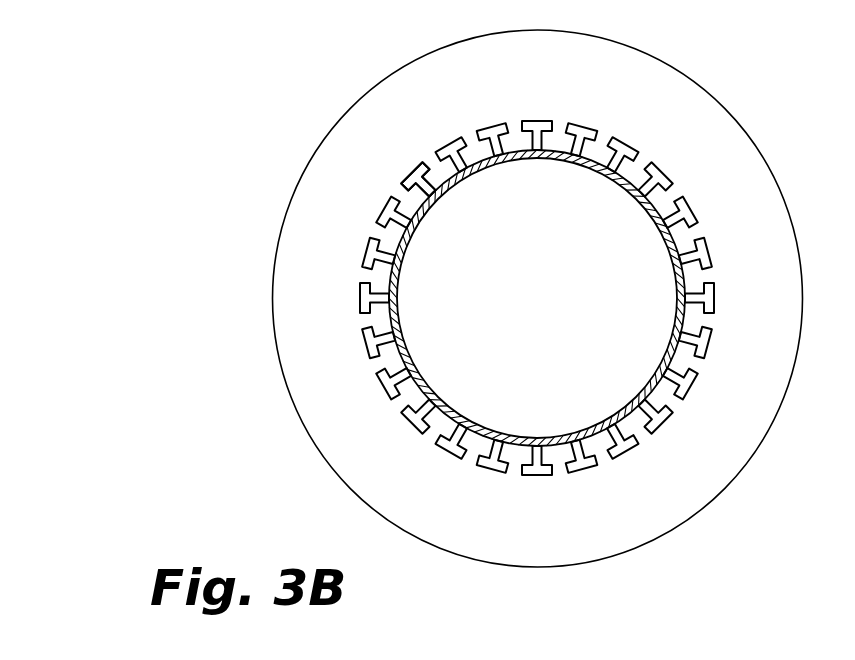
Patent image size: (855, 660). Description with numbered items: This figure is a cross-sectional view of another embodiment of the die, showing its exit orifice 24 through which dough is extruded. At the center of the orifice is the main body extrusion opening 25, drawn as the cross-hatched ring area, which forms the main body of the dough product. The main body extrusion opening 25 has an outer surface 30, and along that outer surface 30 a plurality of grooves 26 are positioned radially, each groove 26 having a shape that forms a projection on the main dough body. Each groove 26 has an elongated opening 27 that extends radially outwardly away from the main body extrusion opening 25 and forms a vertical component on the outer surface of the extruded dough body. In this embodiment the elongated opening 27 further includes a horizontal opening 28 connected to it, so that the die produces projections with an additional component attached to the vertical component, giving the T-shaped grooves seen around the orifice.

The exit orifice 24 is at (471, 254).
The main body extrusion opening 25 is at (385, 366).
The groove 26 is at (418, 170).
The elongated opening 27 is at (398, 196).
The horizontal opening 28 is at (400, 188).
The outer surface 30 is at (368, 317).